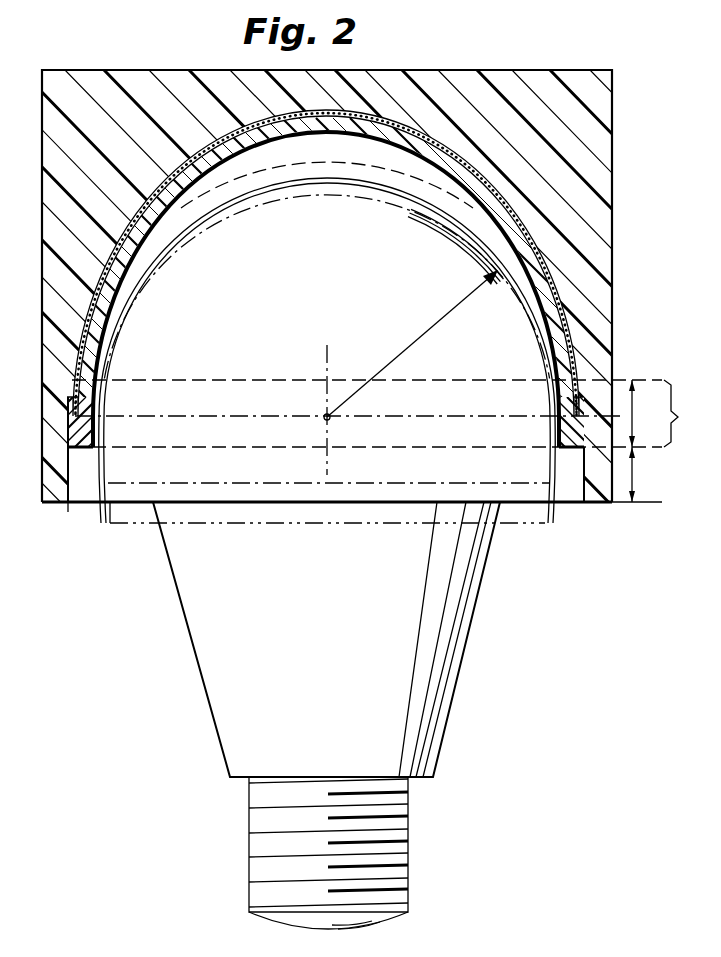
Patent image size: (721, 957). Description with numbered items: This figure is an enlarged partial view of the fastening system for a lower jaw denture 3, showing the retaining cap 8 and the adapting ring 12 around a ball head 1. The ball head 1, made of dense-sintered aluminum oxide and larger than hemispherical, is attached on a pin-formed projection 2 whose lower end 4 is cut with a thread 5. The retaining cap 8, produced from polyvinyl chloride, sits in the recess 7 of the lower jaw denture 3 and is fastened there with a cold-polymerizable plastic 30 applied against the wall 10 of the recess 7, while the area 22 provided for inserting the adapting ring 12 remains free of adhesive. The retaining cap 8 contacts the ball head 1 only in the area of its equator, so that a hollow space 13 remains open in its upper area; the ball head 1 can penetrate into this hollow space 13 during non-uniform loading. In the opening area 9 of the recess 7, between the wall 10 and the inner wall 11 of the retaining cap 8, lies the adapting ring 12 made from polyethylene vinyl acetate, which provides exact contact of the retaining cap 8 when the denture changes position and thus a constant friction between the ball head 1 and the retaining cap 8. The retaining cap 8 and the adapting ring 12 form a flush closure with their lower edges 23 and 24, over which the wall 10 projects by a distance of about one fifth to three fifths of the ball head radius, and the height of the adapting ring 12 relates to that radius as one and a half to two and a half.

The ball head 1 is at (367, 372).
The pin-formed projection 2 is at (200, 626).
The lower jaw denture 3 is at (606, 159).
The lower end 4 is at (262, 820).
The thread 5 is at (410, 872).
The recess 7 is at (540, 279).
The retaining cap 8 is at (562, 330).
The opening area 9 is at (573, 480).
The wall 10 is at (512, 231).
The inner wall 11 is at (72, 388).
The adapting ring 12 is at (68, 412).
The hollow space 13 is at (328, 150).
The area 22 is at (671, 441).
The lower edge 23 is at (101, 482).
The lower edge 24 is at (74, 503).
The plastic 30 is at (480, 182).